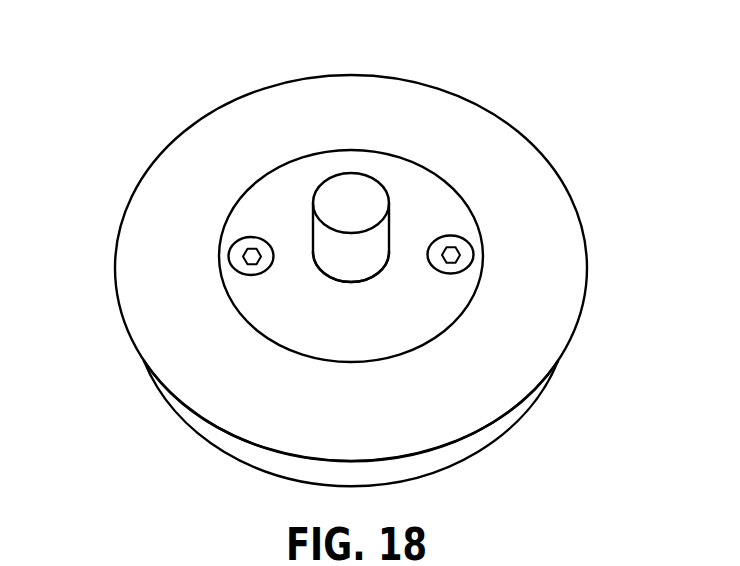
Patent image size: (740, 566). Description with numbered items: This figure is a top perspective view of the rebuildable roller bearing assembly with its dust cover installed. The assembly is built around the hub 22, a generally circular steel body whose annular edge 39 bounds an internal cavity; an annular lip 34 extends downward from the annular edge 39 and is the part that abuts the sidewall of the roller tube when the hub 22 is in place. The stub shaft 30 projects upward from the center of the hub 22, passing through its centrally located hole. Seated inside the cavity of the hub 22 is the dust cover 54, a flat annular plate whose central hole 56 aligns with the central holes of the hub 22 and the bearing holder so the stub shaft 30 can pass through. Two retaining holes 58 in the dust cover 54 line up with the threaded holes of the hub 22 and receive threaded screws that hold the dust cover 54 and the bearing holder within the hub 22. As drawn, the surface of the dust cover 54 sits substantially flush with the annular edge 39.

The hub 22 is at (413, 105).
The stub shaft 30 is at (362, 195).
The annular lip 34 is at (517, 417).
The annular edge 39 is at (217, 393).
The dust cover 54 is at (442, 293).
The central hole 56 is at (325, 272).
The retaining holes 58 is at (250, 240).